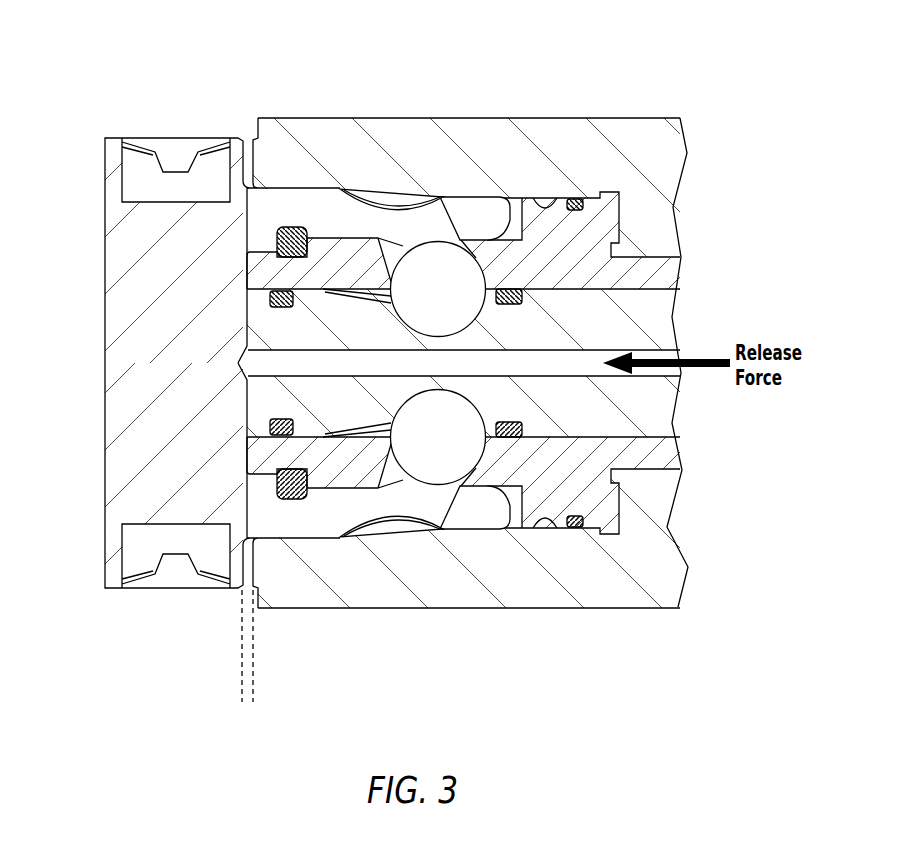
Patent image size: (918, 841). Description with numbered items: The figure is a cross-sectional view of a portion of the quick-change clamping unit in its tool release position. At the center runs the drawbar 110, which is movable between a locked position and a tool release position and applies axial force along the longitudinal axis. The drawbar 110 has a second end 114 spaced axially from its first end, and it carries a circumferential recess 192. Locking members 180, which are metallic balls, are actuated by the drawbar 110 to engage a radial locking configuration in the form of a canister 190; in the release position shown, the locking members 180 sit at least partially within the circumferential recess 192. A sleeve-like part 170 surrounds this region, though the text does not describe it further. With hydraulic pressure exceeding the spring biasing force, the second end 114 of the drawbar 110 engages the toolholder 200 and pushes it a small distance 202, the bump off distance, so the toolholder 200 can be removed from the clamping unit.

The drawbar 110 is at (640, 313).
The second end 114 is at (239, 327).
The release sleeve 170 is at (308, 128).
The locking members 180 is at (432, 267).
The canister 190 is at (547, 237).
The circumferential recess 192 is at (440, 338).
The toolholder 200 is at (104, 248).
The small distance 202 is at (259, 678).